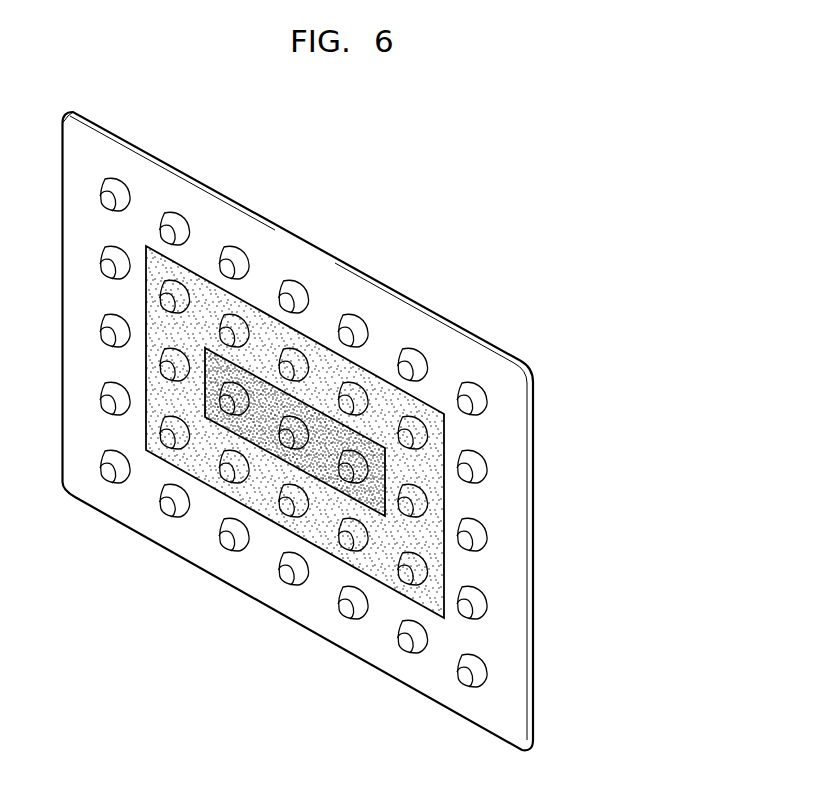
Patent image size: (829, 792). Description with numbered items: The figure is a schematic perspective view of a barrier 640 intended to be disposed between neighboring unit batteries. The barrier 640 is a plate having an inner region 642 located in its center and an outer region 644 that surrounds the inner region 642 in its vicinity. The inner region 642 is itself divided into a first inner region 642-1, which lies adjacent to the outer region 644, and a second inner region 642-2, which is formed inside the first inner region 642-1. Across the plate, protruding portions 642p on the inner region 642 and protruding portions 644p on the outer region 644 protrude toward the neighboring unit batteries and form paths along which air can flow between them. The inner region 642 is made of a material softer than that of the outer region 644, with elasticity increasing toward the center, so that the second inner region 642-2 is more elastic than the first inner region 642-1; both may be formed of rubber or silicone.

The barrier 640 is at (505, 207).
The outer region 644 is at (468, 357).
The protruding portion 644p is at (412, 362).
The inner region 642 is at (634, 458).
The first inner region 642-1 is at (430, 453).
The second inner region 642-2 is at (370, 482).
The protruding portion 642p is at (287, 440).